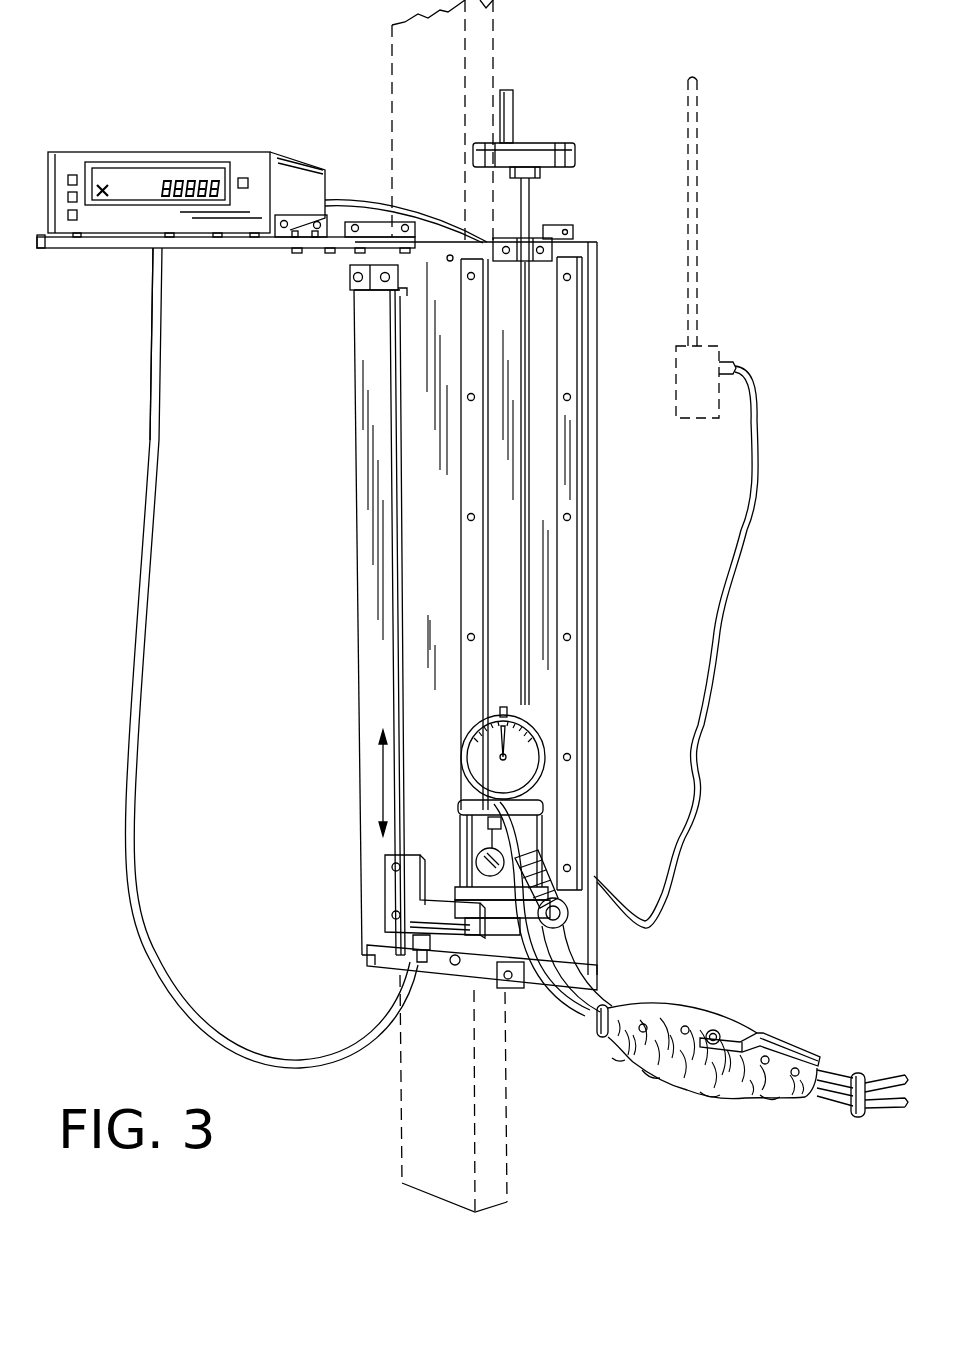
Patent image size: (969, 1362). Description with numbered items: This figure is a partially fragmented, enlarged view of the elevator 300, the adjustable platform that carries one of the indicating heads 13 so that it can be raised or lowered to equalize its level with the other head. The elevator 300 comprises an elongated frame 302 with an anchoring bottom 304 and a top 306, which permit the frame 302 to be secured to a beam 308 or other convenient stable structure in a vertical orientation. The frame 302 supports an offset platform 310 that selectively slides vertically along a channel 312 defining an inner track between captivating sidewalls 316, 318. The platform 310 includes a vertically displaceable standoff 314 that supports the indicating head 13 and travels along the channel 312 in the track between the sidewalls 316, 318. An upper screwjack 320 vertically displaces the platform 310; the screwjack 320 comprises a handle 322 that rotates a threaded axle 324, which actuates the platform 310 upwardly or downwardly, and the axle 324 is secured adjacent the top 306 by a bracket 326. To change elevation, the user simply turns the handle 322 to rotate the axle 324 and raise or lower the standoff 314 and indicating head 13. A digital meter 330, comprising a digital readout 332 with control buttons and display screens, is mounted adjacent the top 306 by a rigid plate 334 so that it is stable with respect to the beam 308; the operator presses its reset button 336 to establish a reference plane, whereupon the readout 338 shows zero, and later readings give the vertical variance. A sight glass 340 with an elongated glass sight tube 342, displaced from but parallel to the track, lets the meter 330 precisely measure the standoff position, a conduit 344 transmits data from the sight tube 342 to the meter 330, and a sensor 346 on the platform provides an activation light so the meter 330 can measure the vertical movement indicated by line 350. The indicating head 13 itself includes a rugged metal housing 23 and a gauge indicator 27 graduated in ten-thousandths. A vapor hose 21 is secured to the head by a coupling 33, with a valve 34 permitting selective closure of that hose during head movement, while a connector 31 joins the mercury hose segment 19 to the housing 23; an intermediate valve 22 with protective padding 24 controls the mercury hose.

The elevator 300 is at (157, 490).
The elongated frame 302 is at (587, 235).
The anchoring bottom 304 is at (377, 965).
The top 306 is at (445, 243).
The beam 308 is at (483, 46).
The offset platform 310 is at (353, 888).
The channel 312 is at (537, 456).
The standoff 314 is at (500, 925).
The sidewall 316 is at (570, 549).
The sidewall 318 is at (470, 550).
The screwjack 320 is at (562, 125).
The handle 322 is at (513, 112).
The axle 324 is at (530, 205).
The bracket 326 is at (544, 240).
The digital meter 330 is at (261, 152).
The digital readout 332 is at (60, 162).
The rigid plate 334 is at (205, 250).
The reset button 336 is at (243, 177).
The readout 338 is at (165, 173).
The sight glass 340 is at (327, 610).
The glass sight tube 342 is at (405, 690).
The conduit 344 is at (135, 748).
The sensor 346 is at (393, 890).
The line 350 is at (383, 774).
The gauge indicator 27 is at (530, 735).
The indicating head 13 is at (542, 865).
The housing 23 is at (546, 810).
The coupling 33 is at (466, 795).
The valve 34 is at (460, 840).
The connector 31 is at (548, 870).
The intermediate valve 22 is at (786, 1048).
The protective padding 24 is at (756, 1077).
The vapor hose 21 is at (878, 1082).
The hose segment 19 is at (883, 1112).